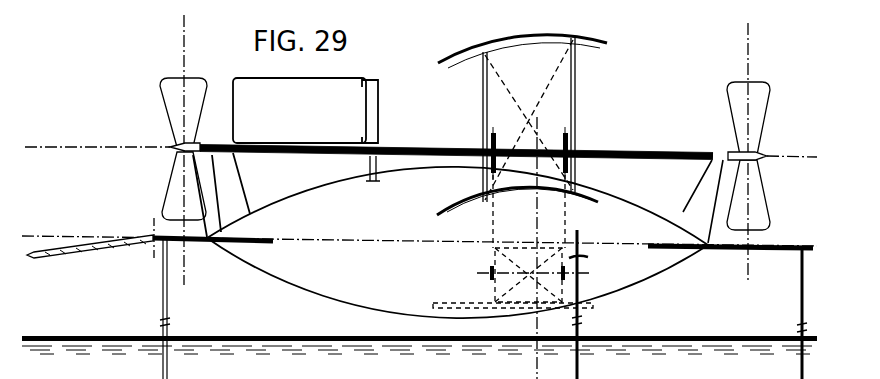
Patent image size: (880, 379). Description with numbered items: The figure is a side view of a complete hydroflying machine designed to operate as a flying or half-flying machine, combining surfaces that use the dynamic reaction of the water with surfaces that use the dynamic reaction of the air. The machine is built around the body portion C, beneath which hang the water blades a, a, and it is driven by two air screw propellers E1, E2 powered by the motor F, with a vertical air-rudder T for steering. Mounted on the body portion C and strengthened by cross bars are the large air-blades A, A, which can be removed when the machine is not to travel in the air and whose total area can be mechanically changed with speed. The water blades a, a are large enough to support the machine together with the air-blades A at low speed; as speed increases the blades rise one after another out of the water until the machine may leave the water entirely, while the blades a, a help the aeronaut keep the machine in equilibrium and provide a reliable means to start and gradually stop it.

The air screw propeller E1 is at (179, 150).
The air screw propeller E2 is at (763, 153).
The vertical air-rudder T is at (420, 182).
The air-blades A is at (522, 114).
The body portion C is at (457, 242).
The motor F is at (513, 248).
The water blades a is at (480, 298).